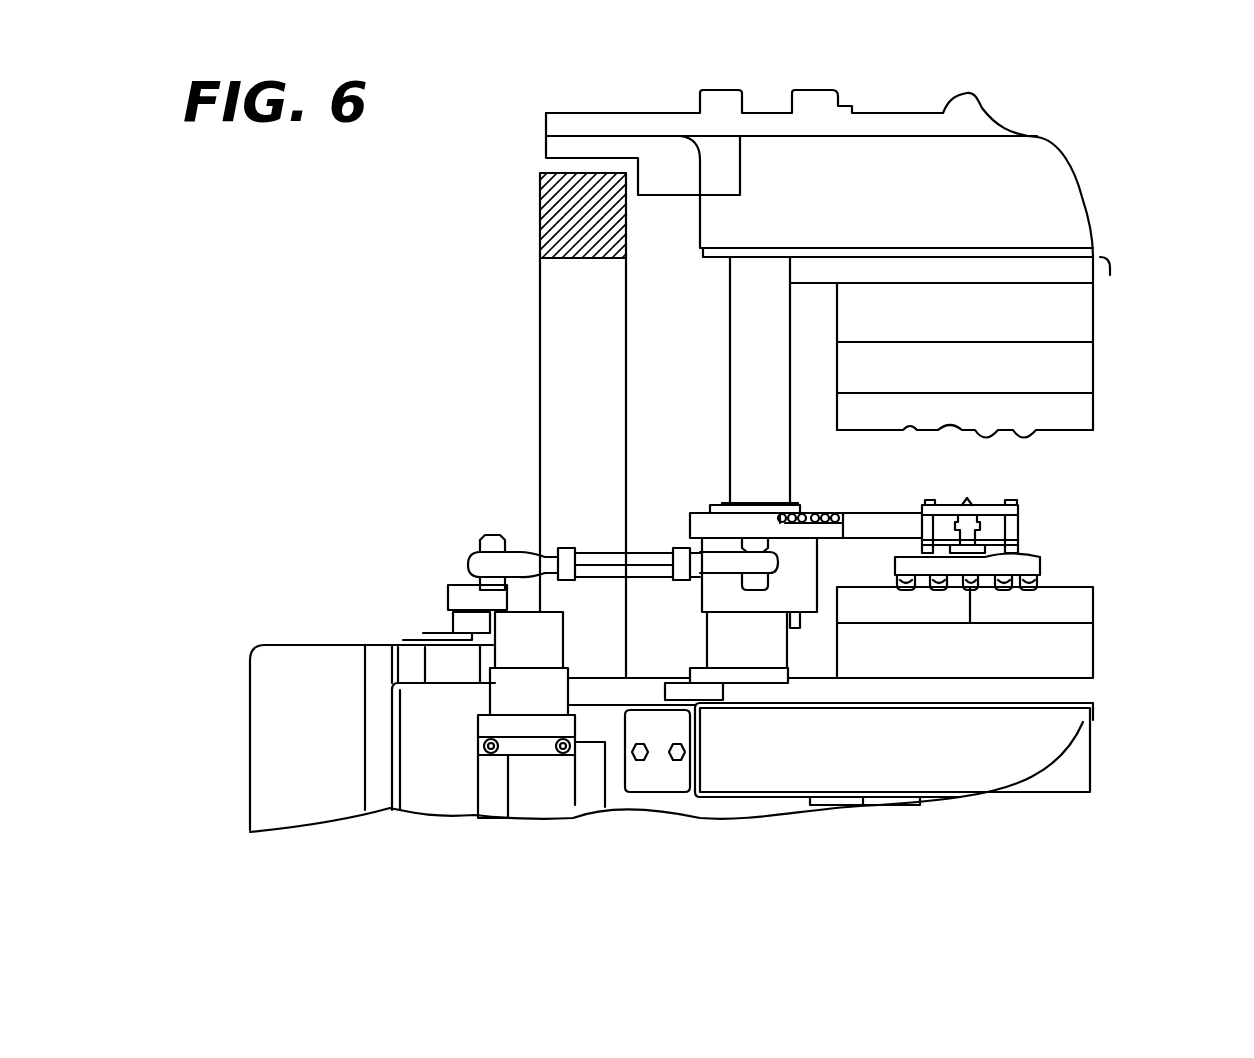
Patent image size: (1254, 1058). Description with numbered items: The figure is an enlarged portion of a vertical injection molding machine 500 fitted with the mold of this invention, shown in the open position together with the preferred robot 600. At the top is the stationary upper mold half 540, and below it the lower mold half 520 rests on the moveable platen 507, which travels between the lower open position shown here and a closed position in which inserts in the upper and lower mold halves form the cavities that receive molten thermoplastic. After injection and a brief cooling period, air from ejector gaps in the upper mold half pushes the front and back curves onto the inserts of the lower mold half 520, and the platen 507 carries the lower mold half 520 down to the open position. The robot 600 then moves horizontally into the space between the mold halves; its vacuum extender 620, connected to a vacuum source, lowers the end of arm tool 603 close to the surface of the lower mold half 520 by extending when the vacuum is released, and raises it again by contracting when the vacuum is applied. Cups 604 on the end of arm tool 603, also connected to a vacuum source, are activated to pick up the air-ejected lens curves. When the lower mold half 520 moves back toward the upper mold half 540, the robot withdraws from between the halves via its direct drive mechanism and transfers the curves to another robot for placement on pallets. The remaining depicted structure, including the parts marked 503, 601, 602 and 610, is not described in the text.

The injection molding machine 500 is at (462, 266).
The mounting plate 503 is at (868, 178).
The upper mold half 540 is at (1103, 256).
The robot 600 is at (690, 500).
The linkage rod 601 is at (606, 557).
The arm 602 is at (874, 525).
The vacuum extender 620 is at (1015, 553).
The end of arm tool 603 is at (1032, 563).
The cups 604 is at (1042, 586).
The lower mold half 520 is at (1103, 590).
The moveable platen 507 is at (1025, 751).
The drive assembly 610 is at (575, 856).